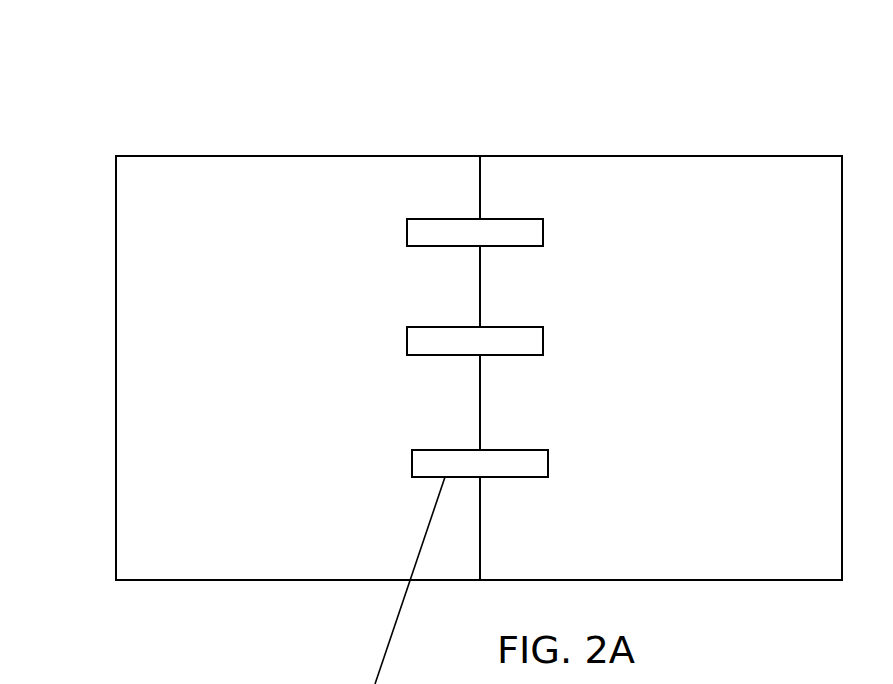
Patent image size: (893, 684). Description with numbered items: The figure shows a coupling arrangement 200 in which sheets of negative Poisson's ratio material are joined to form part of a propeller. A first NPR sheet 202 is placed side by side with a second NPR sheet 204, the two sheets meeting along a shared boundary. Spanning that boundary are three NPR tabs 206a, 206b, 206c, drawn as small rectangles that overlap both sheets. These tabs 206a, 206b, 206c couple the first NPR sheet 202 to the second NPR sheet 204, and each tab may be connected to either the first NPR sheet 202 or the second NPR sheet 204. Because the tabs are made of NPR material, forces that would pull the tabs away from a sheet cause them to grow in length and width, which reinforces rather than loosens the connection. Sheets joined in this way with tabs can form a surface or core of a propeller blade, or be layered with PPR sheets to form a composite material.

The NPR sheet assembly 200 is at (147, 62).
The first NPR sheet 202 is at (289, 192).
The second NPR sheet 204 is at (688, 220).
The NPR tab 206a is at (445, 218).
The NPR tab 206b is at (455, 326).
The NPR tab 206c is at (454, 449).